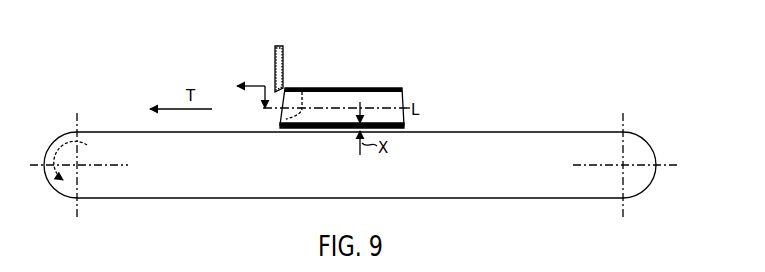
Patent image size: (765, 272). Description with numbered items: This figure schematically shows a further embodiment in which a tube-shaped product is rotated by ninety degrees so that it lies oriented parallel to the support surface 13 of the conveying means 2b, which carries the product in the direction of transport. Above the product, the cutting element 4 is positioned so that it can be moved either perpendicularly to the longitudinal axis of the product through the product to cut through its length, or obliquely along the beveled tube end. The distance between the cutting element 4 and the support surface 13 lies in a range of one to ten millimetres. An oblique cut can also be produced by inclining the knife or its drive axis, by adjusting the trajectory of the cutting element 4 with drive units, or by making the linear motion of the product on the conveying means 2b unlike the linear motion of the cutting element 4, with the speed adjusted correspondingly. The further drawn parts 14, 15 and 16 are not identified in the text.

The support surface 13 is at (133, 131).
The conveying means 2b is at (118, 199).
The product block 14 is at (362, 88).
The cut region 15 is at (301, 104).
The bottom layer 16 is at (307, 128).
The cutting element 4 is at (274, 50).